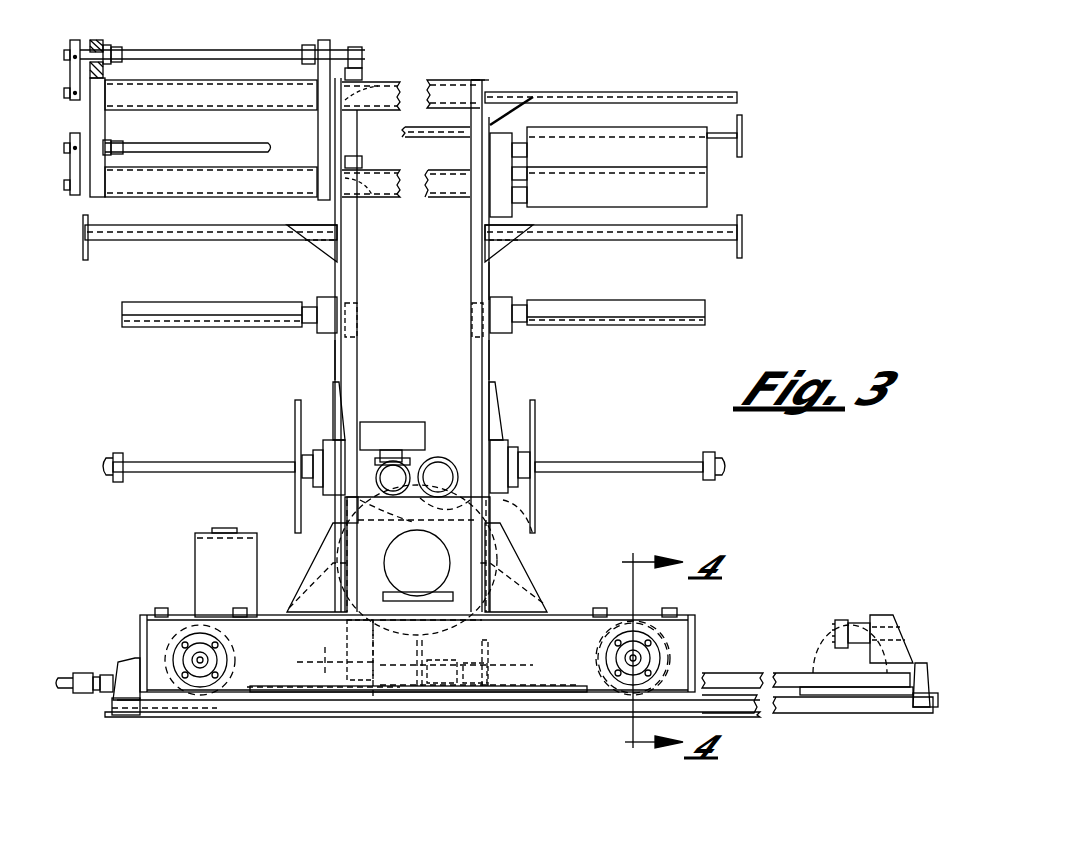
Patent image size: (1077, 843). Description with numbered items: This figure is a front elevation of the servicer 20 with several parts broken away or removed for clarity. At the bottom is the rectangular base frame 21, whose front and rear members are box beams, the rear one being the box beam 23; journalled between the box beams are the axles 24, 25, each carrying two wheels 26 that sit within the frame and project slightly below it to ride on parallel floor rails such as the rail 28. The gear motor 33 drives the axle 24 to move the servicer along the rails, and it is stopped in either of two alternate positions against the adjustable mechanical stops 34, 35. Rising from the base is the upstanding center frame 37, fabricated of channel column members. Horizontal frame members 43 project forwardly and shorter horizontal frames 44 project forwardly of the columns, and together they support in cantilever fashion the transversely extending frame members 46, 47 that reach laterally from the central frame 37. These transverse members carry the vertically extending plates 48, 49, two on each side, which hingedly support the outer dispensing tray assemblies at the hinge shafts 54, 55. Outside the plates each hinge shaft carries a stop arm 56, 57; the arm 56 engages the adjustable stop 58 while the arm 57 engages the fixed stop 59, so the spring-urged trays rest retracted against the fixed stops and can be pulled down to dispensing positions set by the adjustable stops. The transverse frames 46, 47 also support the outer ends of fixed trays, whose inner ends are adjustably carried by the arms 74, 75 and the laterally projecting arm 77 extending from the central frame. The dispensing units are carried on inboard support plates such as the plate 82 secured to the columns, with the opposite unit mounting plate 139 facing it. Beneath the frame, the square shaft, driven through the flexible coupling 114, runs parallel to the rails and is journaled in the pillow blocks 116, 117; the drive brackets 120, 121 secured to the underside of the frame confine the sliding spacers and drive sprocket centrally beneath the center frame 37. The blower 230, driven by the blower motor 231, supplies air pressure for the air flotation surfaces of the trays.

The servicer 20 is at (500, 74).
The rectangular base frame 21 is at (550, 700).
The box beam 23 is at (270, 677).
The axle 24 is at (203, 662).
The axle 25 is at (620, 657).
The wheel 26 is at (620, 688).
The rail 28 is at (485, 707).
The gear motor 33 is at (197, 555).
The adjustable mechanical stop 34 is at (140, 643).
The adjustable mechanical stop 35 is at (893, 620).
The upstanding center frame 37 is at (500, 370).
The horizontal frame member 43 is at (364, 92).
The horizontal frame 44 is at (352, 178).
The transversely extending frame member 46 is at (173, 107).
The transversely extending frame member 47 is at (160, 192).
The vertically extending plate 48 is at (92, 123).
The vertically extending plate 49 is at (322, 40).
The hinge shaft 54 is at (193, 49).
The hinge shaft 55 is at (271, 146).
The stop arm 56 is at (74, 40).
The stop arm 57 is at (355, 47).
The adjustable stop 58 is at (65, 185).
The fixed stop 59 is at (362, 68).
The arm 74 is at (722, 140).
The arm 75 is at (695, 92).
The laterally projecting arm 77 is at (118, 242).
The inboard support plate 82 is at (337, 357).
The flexible coupling 114 is at (87, 690).
The pillow block 116 is at (122, 662).
The pillow block 117 is at (925, 663).
The drive bracket 120 is at (325, 662).
The drive bracket 121 is at (505, 670).
The unit mounting plate 139 is at (490, 278).
The blower 230 is at (536, 531).
The blower motor 231 is at (417, 563).